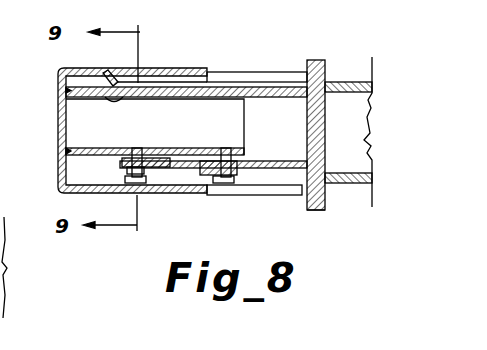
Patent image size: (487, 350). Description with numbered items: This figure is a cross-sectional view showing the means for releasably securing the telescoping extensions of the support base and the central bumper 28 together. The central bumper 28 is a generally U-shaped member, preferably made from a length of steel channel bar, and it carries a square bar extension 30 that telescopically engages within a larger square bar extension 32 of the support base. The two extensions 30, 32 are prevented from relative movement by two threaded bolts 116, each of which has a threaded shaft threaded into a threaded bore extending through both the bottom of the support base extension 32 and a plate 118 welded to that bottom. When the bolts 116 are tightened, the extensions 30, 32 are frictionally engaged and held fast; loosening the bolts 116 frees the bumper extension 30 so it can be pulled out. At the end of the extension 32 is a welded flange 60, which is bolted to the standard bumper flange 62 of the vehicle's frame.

The central bumper 28 is at (59, 128).
The square bar extension 30 is at (123, 90).
The square bar extension 32 is at (208, 73).
The flange 60 is at (305, 72).
The standard bumper flange 62 is at (315, 208).
The threaded bolt 116 is at (143, 184).
The plate 118 is at (222, 132).